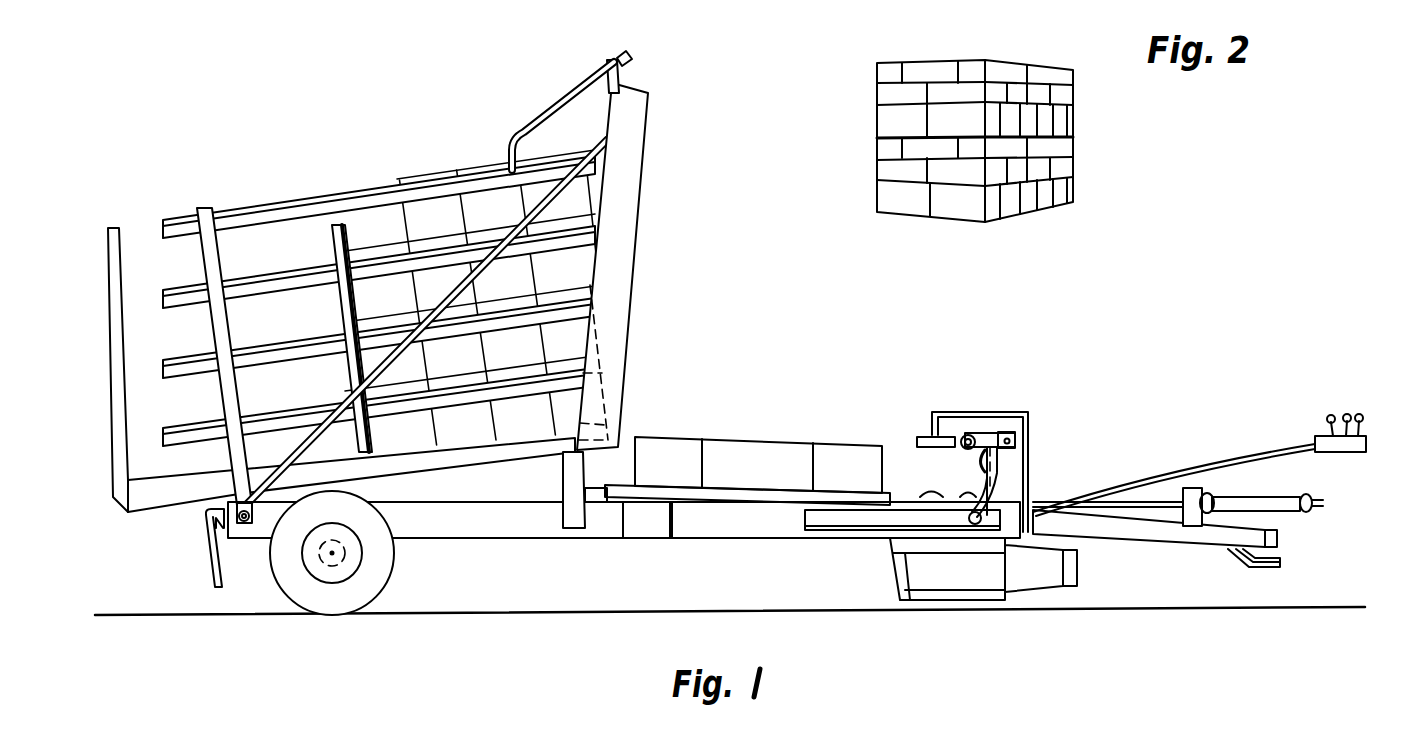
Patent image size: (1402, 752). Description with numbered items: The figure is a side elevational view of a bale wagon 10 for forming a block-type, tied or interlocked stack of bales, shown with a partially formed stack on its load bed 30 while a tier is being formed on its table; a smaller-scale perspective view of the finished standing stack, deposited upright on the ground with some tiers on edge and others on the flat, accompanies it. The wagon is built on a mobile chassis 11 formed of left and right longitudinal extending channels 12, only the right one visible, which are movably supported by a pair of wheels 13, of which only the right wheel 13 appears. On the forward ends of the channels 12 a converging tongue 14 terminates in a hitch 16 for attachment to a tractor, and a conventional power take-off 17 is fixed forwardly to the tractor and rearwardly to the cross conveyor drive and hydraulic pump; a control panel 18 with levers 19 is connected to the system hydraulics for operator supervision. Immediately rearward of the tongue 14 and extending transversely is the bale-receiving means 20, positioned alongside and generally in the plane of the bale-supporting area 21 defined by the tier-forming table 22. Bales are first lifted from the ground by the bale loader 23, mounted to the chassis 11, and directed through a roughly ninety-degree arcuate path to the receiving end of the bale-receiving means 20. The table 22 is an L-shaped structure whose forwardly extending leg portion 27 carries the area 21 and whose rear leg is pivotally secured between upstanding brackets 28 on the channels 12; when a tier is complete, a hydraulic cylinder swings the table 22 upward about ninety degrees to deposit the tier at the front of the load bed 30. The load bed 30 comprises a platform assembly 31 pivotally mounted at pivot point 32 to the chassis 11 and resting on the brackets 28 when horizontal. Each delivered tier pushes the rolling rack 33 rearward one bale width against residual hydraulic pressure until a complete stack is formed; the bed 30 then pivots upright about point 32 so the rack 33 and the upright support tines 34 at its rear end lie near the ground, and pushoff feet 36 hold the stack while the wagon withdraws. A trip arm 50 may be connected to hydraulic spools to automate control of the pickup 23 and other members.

The bale wagon 10 is at (712, 353).
The mobile chassis 11 is at (642, 520).
The longitudinal extending channels 12 is at (624, 538).
The wheels 13 is at (384, 575).
The converging tongue 14 is at (1120, 548).
The hitch 16 is at (1282, 537).
The power take-off 17 is at (1247, 497).
The control panel 18 is at (1342, 446).
The levers 19 is at (1348, 412).
The bale-receiving means 20 is at (938, 447).
The bale-supporting area 21 is at (750, 490).
The tier-forming table 22 is at (722, 510).
The bale loader 23 is at (965, 600).
The forwardly extending leg portion 27 is at (670, 545).
The upstanding brackets 28 is at (573, 518).
The load bed 30 is at (342, 281).
The platform assembly 31 is at (226, 472).
The pivot point 32 is at (243, 525).
The rolling rack 33 is at (332, 253).
The upright support tines 34 is at (109, 350).
The pushoff feet 36 is at (207, 551).
The trip arm 50 is at (962, 410).